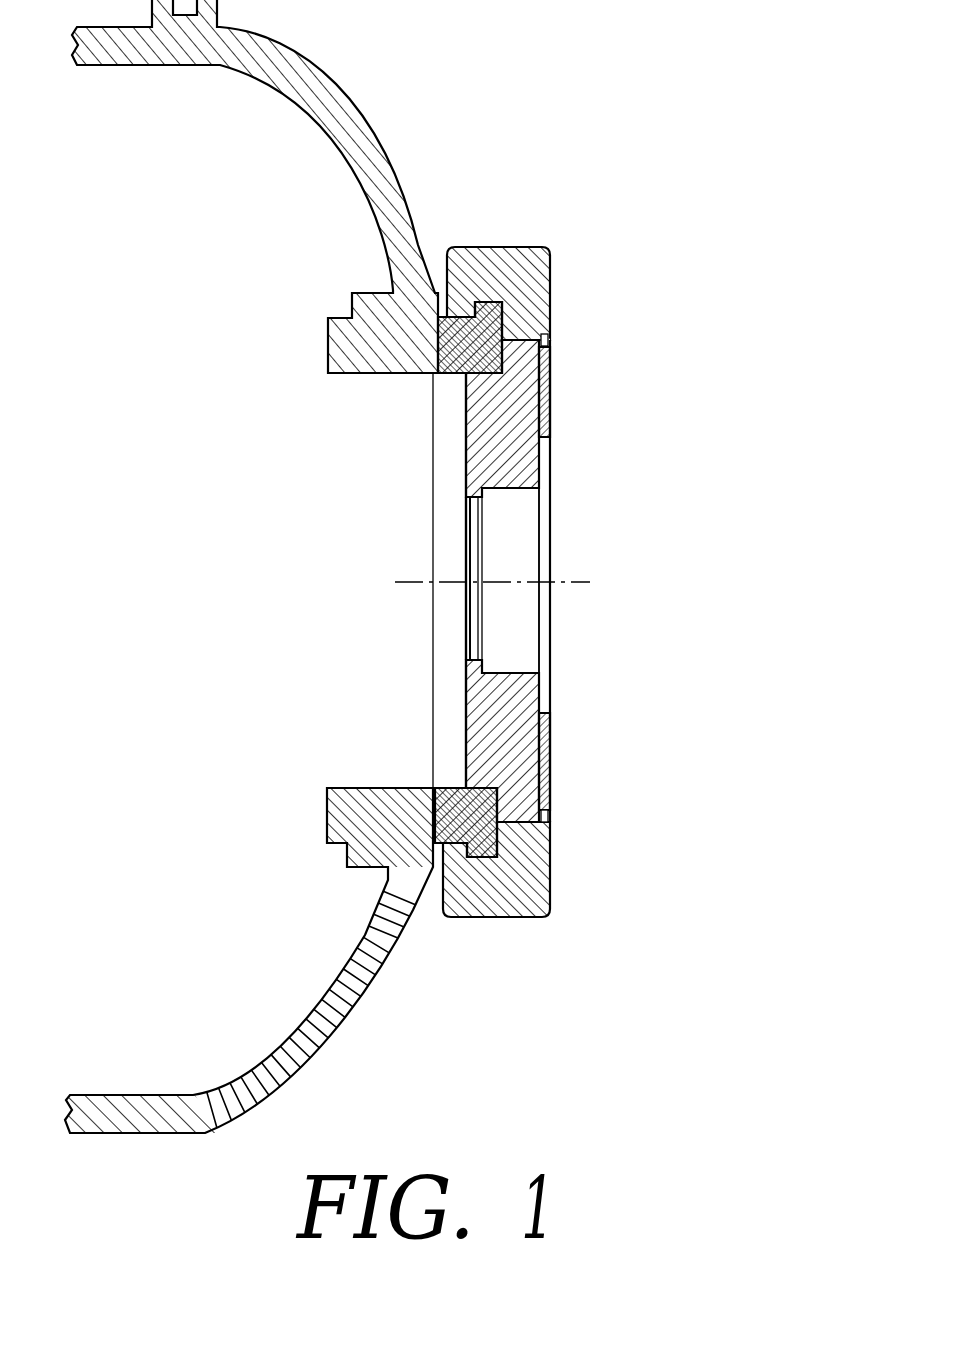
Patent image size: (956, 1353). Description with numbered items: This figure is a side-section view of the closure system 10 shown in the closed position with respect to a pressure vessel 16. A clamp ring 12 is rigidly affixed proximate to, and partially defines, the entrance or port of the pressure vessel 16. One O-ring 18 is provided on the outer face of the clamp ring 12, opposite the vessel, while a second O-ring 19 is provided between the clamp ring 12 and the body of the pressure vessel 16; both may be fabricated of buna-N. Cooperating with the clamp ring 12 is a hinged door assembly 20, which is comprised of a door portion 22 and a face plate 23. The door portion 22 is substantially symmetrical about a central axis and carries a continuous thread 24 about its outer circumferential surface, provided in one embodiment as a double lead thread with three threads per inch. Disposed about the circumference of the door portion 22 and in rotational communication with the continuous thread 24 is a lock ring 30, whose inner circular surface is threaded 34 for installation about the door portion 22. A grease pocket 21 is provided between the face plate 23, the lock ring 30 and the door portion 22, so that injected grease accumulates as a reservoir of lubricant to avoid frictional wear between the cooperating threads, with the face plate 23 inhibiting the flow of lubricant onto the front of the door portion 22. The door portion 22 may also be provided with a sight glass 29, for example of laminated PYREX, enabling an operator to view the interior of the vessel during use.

The closure system 10 is at (650, 112).
The clamp ring 12 is at (440, 376).
The pressure vessel 16 is at (352, 112).
The O-ring 18 is at (518, 800).
The second O-ring 19 is at (425, 790).
The hinged door assembly 20 is at (553, 382).
The grease pocket 21 is at (550, 336).
The door portion 22 is at (527, 693).
The face plate 23 is at (550, 730).
The continuous thread 24 is at (550, 795).
The sight glass 29 is at (513, 558).
The lock ring 30 is at (552, 265).
The threads 34 is at (550, 858).